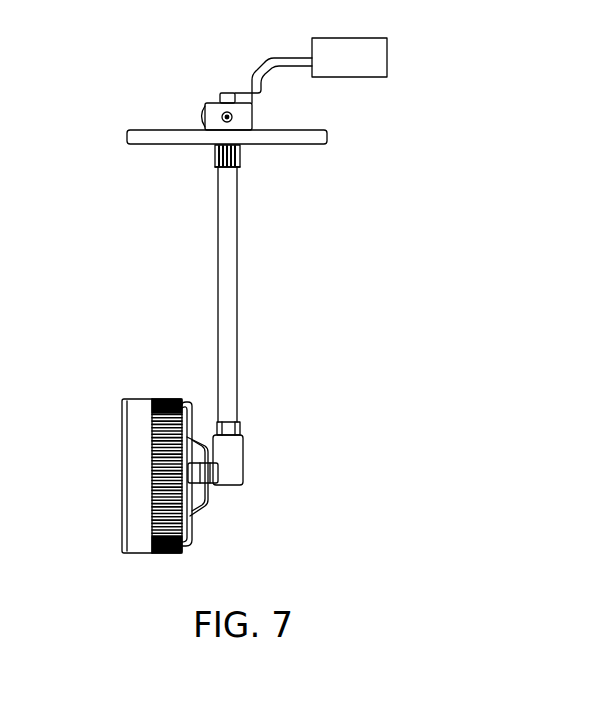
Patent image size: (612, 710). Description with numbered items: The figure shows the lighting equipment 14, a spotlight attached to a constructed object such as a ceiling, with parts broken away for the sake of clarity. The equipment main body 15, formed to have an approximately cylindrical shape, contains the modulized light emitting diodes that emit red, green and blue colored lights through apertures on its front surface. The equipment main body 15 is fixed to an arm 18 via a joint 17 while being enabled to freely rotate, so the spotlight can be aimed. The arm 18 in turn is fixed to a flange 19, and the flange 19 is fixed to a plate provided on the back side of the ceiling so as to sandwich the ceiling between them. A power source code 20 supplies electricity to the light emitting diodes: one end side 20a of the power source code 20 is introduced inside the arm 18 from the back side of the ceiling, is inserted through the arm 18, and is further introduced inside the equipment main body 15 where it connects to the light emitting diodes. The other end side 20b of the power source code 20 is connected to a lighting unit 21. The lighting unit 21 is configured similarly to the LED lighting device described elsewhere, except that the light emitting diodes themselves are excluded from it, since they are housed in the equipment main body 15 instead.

The lighting equipment 14 is at (368, 203).
The equipment main body 15 is at (140, 400).
The joint 17 is at (243, 460).
The arm 18 is at (218, 268).
The flange 19 is at (318, 145).
The power source code 20 is at (206, 100).
The one end side of power source code 20a is at (197, 508).
The other end side of power source code 20b is at (283, 57).
The lighting unit 21 is at (350, 77).